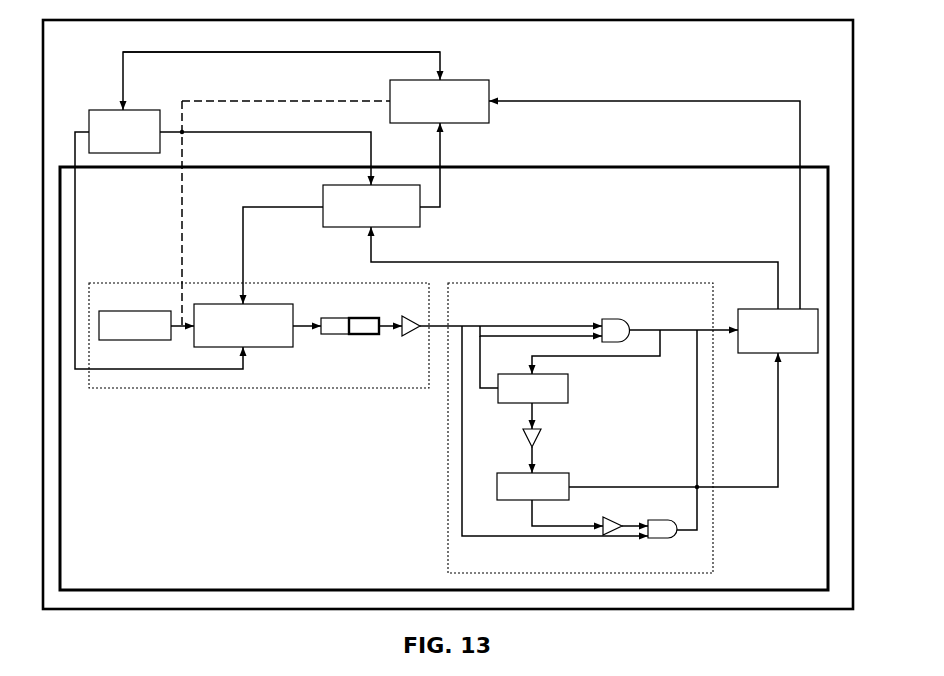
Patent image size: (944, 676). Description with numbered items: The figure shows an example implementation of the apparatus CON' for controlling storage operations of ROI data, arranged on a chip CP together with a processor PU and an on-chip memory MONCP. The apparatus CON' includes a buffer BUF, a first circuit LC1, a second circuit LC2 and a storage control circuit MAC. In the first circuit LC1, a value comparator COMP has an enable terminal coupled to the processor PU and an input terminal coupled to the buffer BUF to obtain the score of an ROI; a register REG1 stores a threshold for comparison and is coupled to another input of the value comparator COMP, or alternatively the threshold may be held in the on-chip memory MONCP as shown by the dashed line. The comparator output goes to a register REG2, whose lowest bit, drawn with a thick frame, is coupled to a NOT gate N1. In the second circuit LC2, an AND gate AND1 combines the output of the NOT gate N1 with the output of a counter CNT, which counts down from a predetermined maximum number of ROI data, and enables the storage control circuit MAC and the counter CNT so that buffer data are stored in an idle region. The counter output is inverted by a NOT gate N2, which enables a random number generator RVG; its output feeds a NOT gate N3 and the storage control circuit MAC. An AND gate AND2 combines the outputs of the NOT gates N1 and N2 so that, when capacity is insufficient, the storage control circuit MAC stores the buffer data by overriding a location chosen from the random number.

The chip CP is at (448, 314).
The apparatus CON' is at (444, 378).
The processor PU is at (257, 210).
The on-chip memory MONCP is at (491, 203).
The buffer BUF is at (510, 216).
The first circuit LC1 is at (259, 336).
The register REG1 is at (146, 325).
The value comparator COMP is at (257, 325).
The register REG2 is at (361, 314).
The NOT gate N1 is at (523, 426).
The second circuit LC2 is at (580, 429).
The AND gate AND1 is at (635, 413).
The storage control circuit MAC is at (778, 331).
The counter CNT is at (533, 401).
The NOT gate N2 is at (546, 451).
The random number generator RVG is at (637, 439).
The NOT gate N3 is at (624, 513).
The AND gate AND2 is at (666, 546).